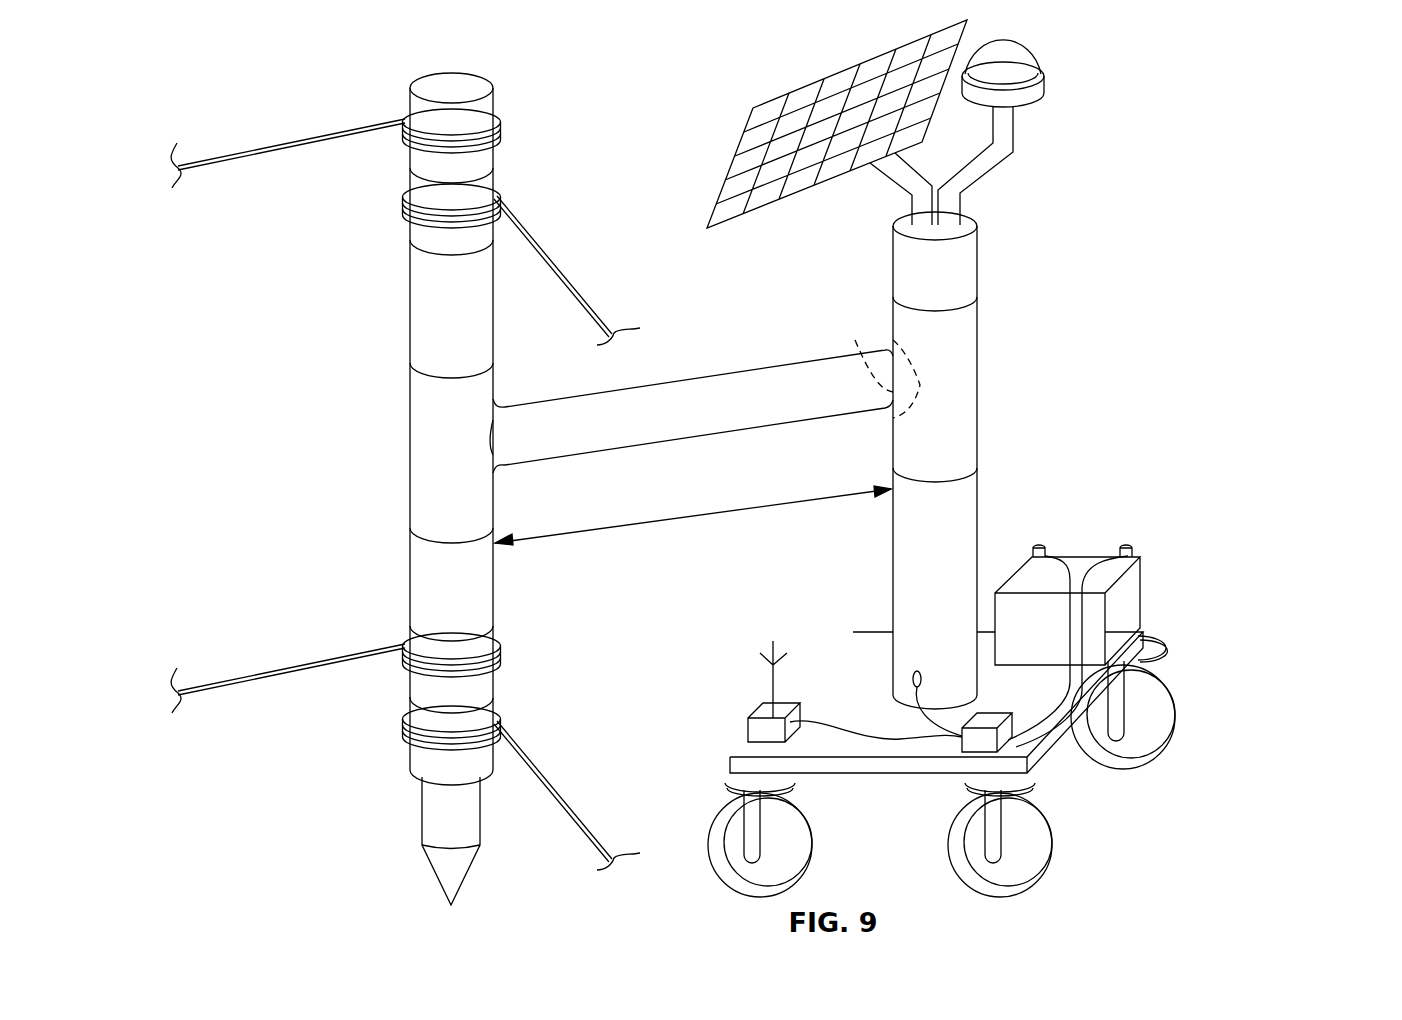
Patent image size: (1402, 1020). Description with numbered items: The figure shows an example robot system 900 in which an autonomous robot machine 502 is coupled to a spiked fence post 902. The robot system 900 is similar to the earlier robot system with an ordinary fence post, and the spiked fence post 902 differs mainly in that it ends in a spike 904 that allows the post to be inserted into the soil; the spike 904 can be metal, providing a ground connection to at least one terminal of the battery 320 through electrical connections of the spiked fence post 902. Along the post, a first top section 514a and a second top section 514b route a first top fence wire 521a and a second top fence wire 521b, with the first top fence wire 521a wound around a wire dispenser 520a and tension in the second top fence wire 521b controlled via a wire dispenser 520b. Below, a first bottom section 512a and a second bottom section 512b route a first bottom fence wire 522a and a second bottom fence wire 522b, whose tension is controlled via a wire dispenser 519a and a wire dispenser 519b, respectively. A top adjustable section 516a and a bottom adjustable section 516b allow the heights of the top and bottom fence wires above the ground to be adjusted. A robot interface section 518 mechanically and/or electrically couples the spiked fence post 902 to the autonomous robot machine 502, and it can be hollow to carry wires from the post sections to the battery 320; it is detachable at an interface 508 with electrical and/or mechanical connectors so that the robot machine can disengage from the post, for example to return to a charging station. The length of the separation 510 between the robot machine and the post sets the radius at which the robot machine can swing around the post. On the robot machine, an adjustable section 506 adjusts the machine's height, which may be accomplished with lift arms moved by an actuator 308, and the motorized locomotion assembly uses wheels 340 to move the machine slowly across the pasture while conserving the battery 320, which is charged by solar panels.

The robot system 900 is at (1250, 100).
The spiked fence post 902 is at (372, 73).
The spike 904 is at (440, 855).
The autonomous robot machine 502 is at (785, 72).
The adjustable section 506 is at (900, 565).
The interface 508 is at (858, 365).
The separation 510 is at (663, 523).
The bottom section 512a is at (510, 620).
The bottom section 512b is at (510, 697).
The top section 514a is at (510, 95).
The top section 514b is at (510, 172).
The top adjustable section 516a is at (420, 330).
The bottom adjustable section 516b is at (420, 597).
The robot interface section 518 is at (425, 461).
The wire dispenser 519a is at (405, 668).
The wire dispenser 519b is at (405, 742).
The wire dispenser 520a is at (405, 140).
The wire dispenser 520b is at (405, 214).
The top fence wire 521a is at (252, 147).
The top fence wire 521b is at (600, 305).
The bottom fence wire 522a is at (252, 672).
The bottom fence wire 522b is at (600, 830).
The actuator 308 is at (985, 745).
The battery 320 is at (1130, 587).
The wheels 340 is at (1165, 712).